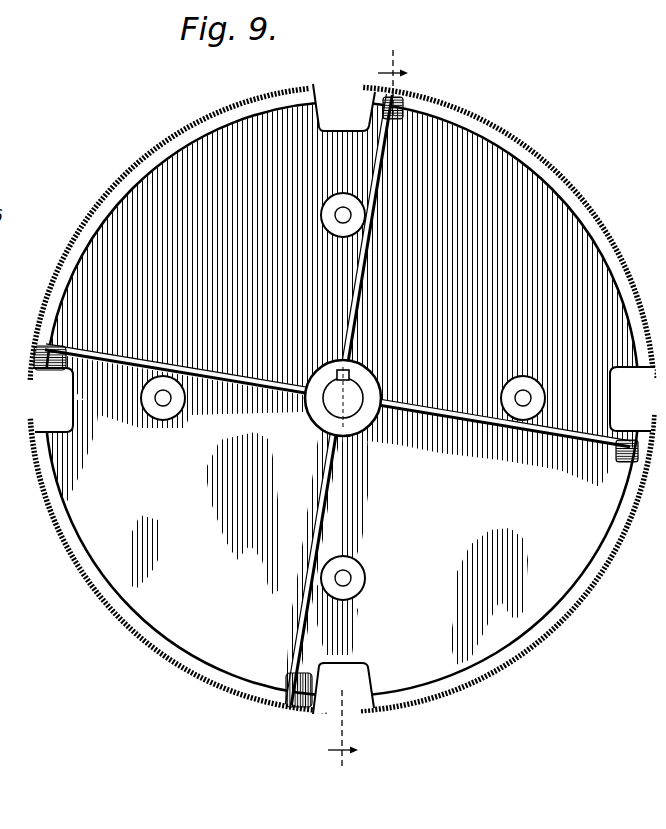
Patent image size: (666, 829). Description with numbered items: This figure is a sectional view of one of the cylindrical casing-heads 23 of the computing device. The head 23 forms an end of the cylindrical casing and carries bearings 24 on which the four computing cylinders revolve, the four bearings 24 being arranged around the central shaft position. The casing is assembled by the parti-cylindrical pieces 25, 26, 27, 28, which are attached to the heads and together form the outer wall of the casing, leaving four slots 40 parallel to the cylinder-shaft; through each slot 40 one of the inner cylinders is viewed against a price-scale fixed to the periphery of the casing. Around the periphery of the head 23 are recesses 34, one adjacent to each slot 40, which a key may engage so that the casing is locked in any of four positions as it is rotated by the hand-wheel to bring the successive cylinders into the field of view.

The casing-head 23 is at (333, 345).
The bearing 24 is at (340, 230).
The parti-cylindrical piece 25 is at (172, 138).
The parti-cylindrical piece 26 is at (598, 209).
The parti-cylindrical piece 27 is at (568, 617).
The parti-cylindrical piece 28 is at (118, 618).
The recess 34 is at (381, 92).
The slot 40 is at (338, 90).